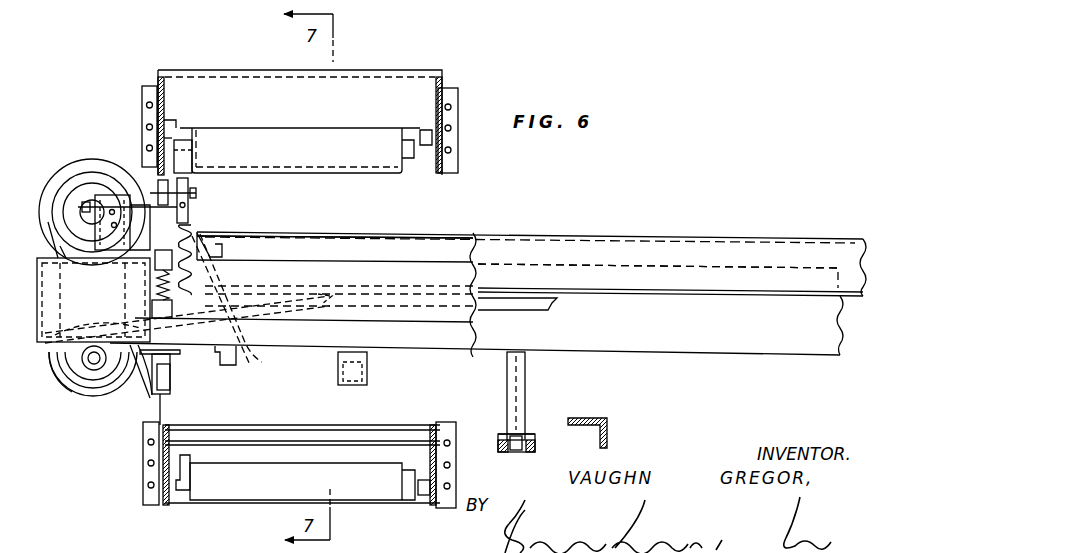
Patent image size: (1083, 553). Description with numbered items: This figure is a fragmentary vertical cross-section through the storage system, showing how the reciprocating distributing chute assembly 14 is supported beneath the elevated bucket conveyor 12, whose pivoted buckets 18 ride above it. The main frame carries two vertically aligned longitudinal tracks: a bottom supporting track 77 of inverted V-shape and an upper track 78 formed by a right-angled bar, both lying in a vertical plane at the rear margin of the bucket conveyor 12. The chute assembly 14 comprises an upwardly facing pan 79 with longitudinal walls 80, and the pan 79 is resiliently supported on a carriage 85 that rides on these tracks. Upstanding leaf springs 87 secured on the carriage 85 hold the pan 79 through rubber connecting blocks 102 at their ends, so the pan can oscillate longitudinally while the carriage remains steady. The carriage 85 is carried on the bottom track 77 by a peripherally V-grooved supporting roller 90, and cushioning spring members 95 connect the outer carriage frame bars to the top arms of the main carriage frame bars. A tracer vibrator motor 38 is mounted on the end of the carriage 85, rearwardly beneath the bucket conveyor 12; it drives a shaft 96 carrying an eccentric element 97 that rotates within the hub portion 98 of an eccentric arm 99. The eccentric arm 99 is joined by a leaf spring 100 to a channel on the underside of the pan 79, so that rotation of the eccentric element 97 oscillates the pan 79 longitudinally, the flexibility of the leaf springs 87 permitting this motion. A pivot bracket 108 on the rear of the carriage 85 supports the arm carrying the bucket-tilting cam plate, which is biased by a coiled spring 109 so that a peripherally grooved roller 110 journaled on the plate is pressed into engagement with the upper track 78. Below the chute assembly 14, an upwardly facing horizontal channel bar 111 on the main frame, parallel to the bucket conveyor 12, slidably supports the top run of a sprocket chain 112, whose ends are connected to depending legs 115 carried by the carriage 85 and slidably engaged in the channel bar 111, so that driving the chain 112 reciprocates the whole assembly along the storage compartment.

The bucket conveyor 12 is at (156, 69).
The distributing chute assembly 14 is at (751, 232).
The buckets 18 is at (283, 160).
The tracer vibrator motor 38 is at (62, 170).
The bottom longitudinal supporting track 77 is at (160, 422).
The upper longitudinal track 78 is at (150, 172).
The pan 79 is at (420, 244).
The longitudinal walls 80 is at (658, 258).
The carriage 85 is at (40, 345).
The leaf springs 87 is at (220, 278).
The supporting roller 90 is at (168, 398).
The cushioning spring members 95 is at (172, 288).
The shaft 96 is at (78, 372).
The eccentric element 97 is at (92, 368).
The hub portion 98 is at (62, 382).
The eccentric arm 99 is at (146, 362).
The leaf spring 100 is at (252, 358).
The rubber connecting blocks 102 is at (232, 368).
The pivot bracket 108 is at (100, 195).
The coiled spring 109 is at (197, 236).
The peripherally grooved roller 110 is at (172, 190).
The horizontal channel bar 111 is at (532, 452).
The sprocket chain 112 is at (506, 436).
The depending legs 115 is at (522, 412).